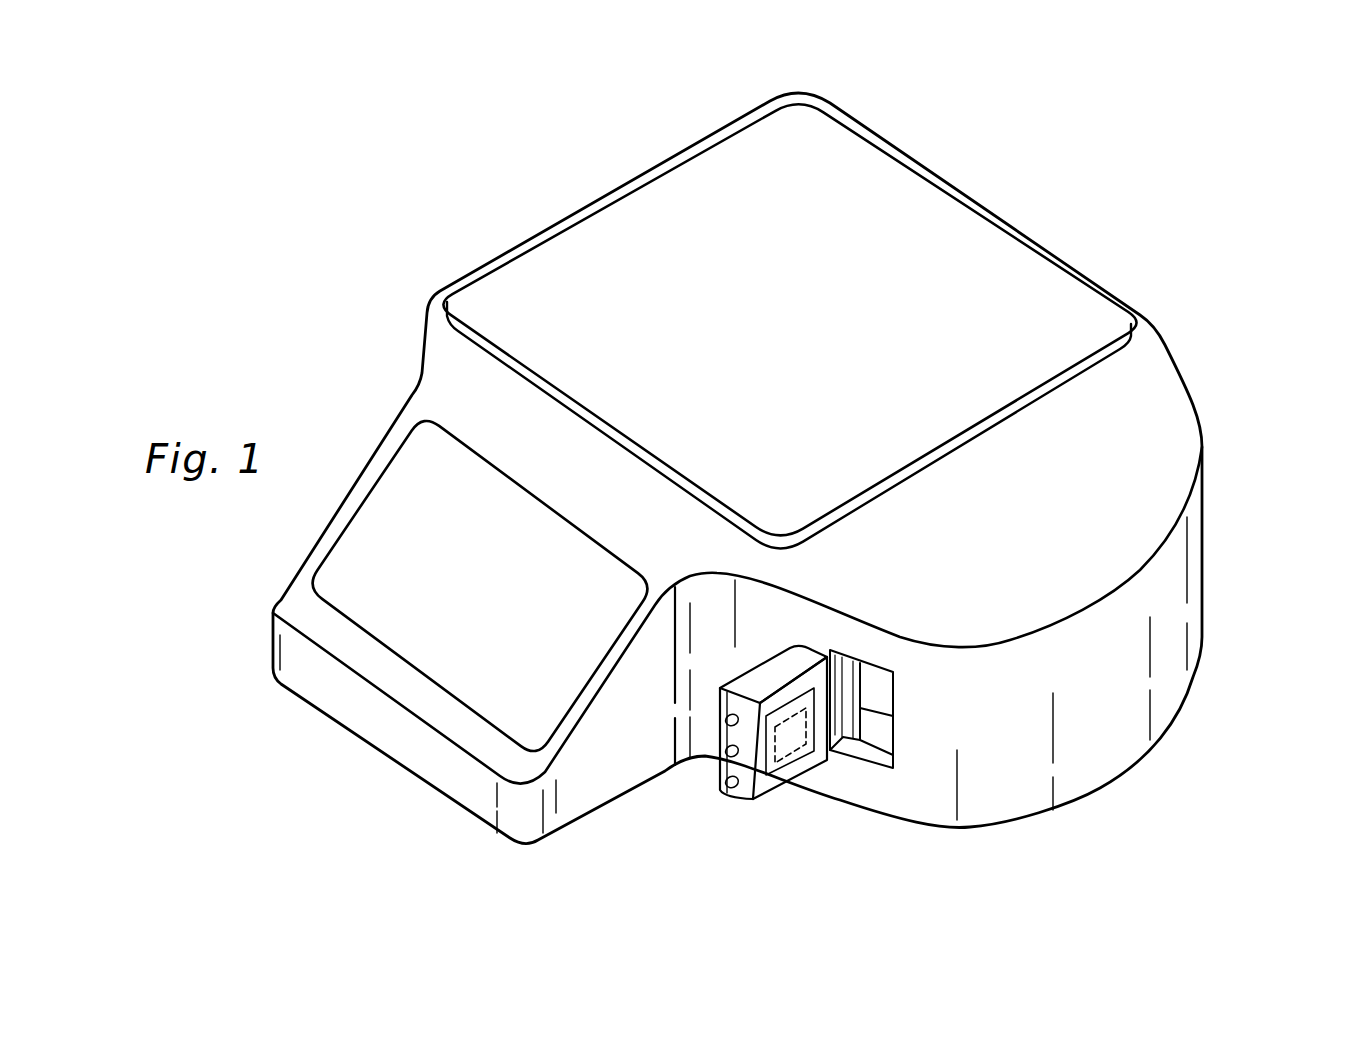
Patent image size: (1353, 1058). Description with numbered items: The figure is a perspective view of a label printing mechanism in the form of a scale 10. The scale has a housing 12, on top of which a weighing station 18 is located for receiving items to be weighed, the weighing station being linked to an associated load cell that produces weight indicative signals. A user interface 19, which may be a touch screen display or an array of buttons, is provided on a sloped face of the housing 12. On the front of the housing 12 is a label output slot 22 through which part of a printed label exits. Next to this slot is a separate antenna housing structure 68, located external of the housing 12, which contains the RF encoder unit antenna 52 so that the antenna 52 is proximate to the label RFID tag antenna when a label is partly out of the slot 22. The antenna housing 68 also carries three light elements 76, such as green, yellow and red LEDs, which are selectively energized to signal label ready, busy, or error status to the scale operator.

The scale 10 is at (368, 229).
The housing 12 is at (1110, 437).
The weighing station 18 is at (930, 277).
The user interface 19 is at (450, 590).
The label output slot 22 is at (893, 717).
The antenna 52 is at (790, 732).
The antenna housing structure 68 is at (773, 670).
The light elements 76 is at (730, 756).